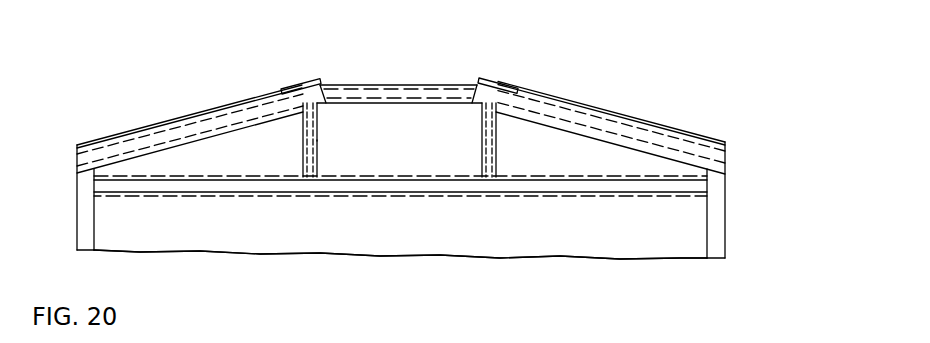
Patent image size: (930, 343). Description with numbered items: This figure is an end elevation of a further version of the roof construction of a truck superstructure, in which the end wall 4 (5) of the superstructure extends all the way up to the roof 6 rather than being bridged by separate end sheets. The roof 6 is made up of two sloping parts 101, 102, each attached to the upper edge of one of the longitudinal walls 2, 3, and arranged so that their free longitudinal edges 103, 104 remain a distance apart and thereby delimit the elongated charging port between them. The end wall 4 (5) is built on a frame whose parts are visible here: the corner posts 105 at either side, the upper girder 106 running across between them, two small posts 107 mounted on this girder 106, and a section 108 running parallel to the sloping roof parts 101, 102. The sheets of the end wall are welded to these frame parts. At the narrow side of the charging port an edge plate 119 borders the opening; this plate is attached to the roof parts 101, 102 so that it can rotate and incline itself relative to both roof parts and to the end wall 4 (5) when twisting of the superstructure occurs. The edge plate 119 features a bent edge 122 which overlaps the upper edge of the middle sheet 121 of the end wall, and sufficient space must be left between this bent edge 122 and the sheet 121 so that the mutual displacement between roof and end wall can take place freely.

The longitudinal wall 2 is at (729, 218).
The longitudinal wall 3 is at (73, 202).
The end wall 4 is at (347, 232).
The end wall 5 is at (400, 289).
The roof 6 is at (667, 115).
The sloping roof part 101 is at (582, 107).
The sloping roof part 102 is at (173, 115).
The free longitudinal edge 103 is at (480, 77).
The free longitudinal edge 104 is at (315, 78).
The corner post 105 is at (87, 219).
The upper girder 106 is at (577, 183).
The small post 107 is at (303, 147).
The section 108 is at (113, 152).
The edge plate 119 is at (445, 84).
The middle sheet 121 is at (423, 133).
The bent edge 122 is at (385, 95).